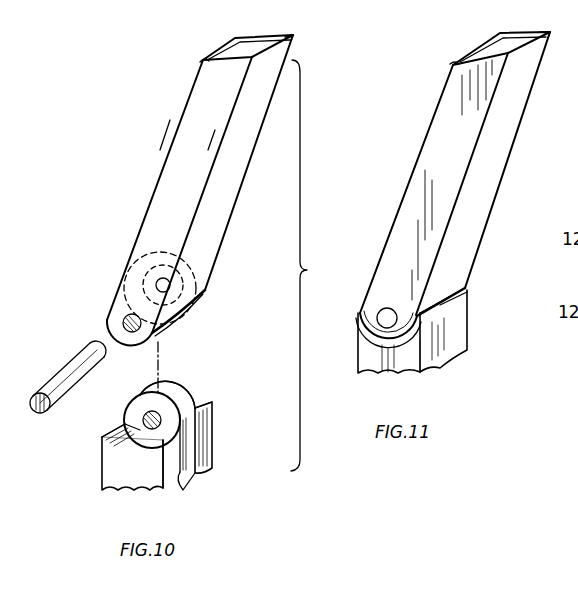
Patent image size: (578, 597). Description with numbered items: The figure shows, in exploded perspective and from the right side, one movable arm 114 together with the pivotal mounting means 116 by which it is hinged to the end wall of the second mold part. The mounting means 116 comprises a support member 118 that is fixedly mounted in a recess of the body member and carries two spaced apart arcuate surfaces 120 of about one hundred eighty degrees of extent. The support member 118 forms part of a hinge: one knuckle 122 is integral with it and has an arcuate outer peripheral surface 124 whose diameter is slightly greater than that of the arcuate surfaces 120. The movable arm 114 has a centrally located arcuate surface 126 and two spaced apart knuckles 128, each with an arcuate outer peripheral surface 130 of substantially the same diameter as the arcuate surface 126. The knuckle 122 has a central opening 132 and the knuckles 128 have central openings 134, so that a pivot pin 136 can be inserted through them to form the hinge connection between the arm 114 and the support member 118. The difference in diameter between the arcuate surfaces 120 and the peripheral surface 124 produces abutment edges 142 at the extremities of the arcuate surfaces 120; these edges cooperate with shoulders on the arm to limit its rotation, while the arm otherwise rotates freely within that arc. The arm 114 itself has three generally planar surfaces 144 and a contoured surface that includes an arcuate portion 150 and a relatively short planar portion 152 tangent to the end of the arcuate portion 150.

In FIG. 10, the movable arm 114 is at (165, 147).
In FIG. 11, the movable arm 114 is at (437, 118).
In FIG. 11, the pivotal mounting means 116 is at (361, 270).
In FIG. 10, the support member 118 is at (212, 450).
In FIG. 11, the support member 118 is at (468, 332).
In FIG. 10, the arcuate surface 120 is at (197, 398).
In FIG. 10, the knuckle 122 is at (136, 402).
In FIG. 10, the arcuate outer peripheral surface 124 is at (170, 395).
In FIG. 11, the arcuate outer peripheral surface 124 is at (450, 300).
In FIG. 10, the arcuate surface 126 is at (128, 268).
In FIG. 10, the knuckle 128 is at (205, 280).
In FIG. 11, the knuckle 128 is at (457, 277).
In FIG. 11, the arcuate outer peripheral surface 130 is at (388, 322).
In FIG. 10, the central opening 132 is at (147, 421).
In FIG. 11, the central opening 134 is at (425, 365).
In FIG. 10, the pivot pin 136 is at (62, 380).
In FIG. 10, the abutment edge 142 is at (210, 404).
In FIG. 11, the abutment edge 142 is at (466, 289).
In FIG. 10, the planar surface 144 is at (194, 180).
In FIG. 11, the planar surface 144 is at (455, 169).
In FIG. 10, the arcuate portion 150 is at (203, 60).
In FIG. 11, the arcuate portion 150 is at (453, 62).
In FIG. 10, the planar portion 152 is at (285, 36).
In FIG. 11, the planar portion 152 is at (512, 38).